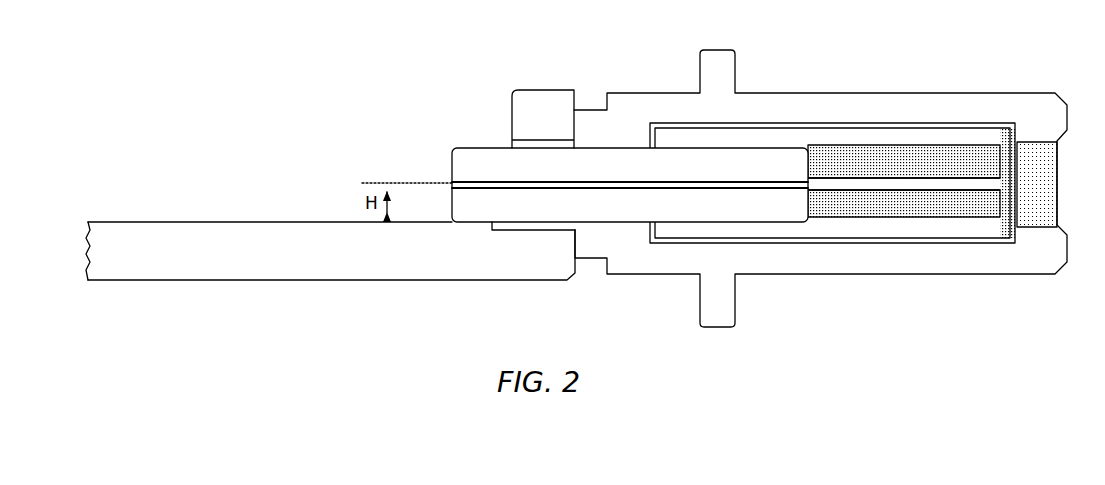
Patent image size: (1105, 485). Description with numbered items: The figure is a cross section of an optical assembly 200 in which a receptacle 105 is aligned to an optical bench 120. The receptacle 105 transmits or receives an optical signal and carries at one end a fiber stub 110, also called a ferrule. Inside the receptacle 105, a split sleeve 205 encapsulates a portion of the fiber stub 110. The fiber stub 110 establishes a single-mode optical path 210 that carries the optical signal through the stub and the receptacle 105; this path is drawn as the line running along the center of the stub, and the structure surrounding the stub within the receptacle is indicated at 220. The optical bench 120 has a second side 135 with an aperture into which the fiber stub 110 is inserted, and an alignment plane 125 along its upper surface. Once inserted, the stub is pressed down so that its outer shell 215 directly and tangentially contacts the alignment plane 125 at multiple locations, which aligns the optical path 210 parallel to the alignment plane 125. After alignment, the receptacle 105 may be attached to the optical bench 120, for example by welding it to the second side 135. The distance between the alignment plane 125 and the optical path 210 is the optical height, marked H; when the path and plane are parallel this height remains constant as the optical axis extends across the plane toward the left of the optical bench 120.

The optical assembly 200 is at (165, 99).
The receptacle 105 is at (885, 93).
The fiber stub 110 is at (485, 147).
The second side 135 is at (548, 90).
The optical bench 120 is at (260, 283).
The alignment plane 125 is at (157, 214).
The outer shell 215 is at (473, 232).
The single-mode optical path 210 is at (588, 199).
The sleeve 220 is at (755, 208).
The split sleeve 205 is at (922, 231).